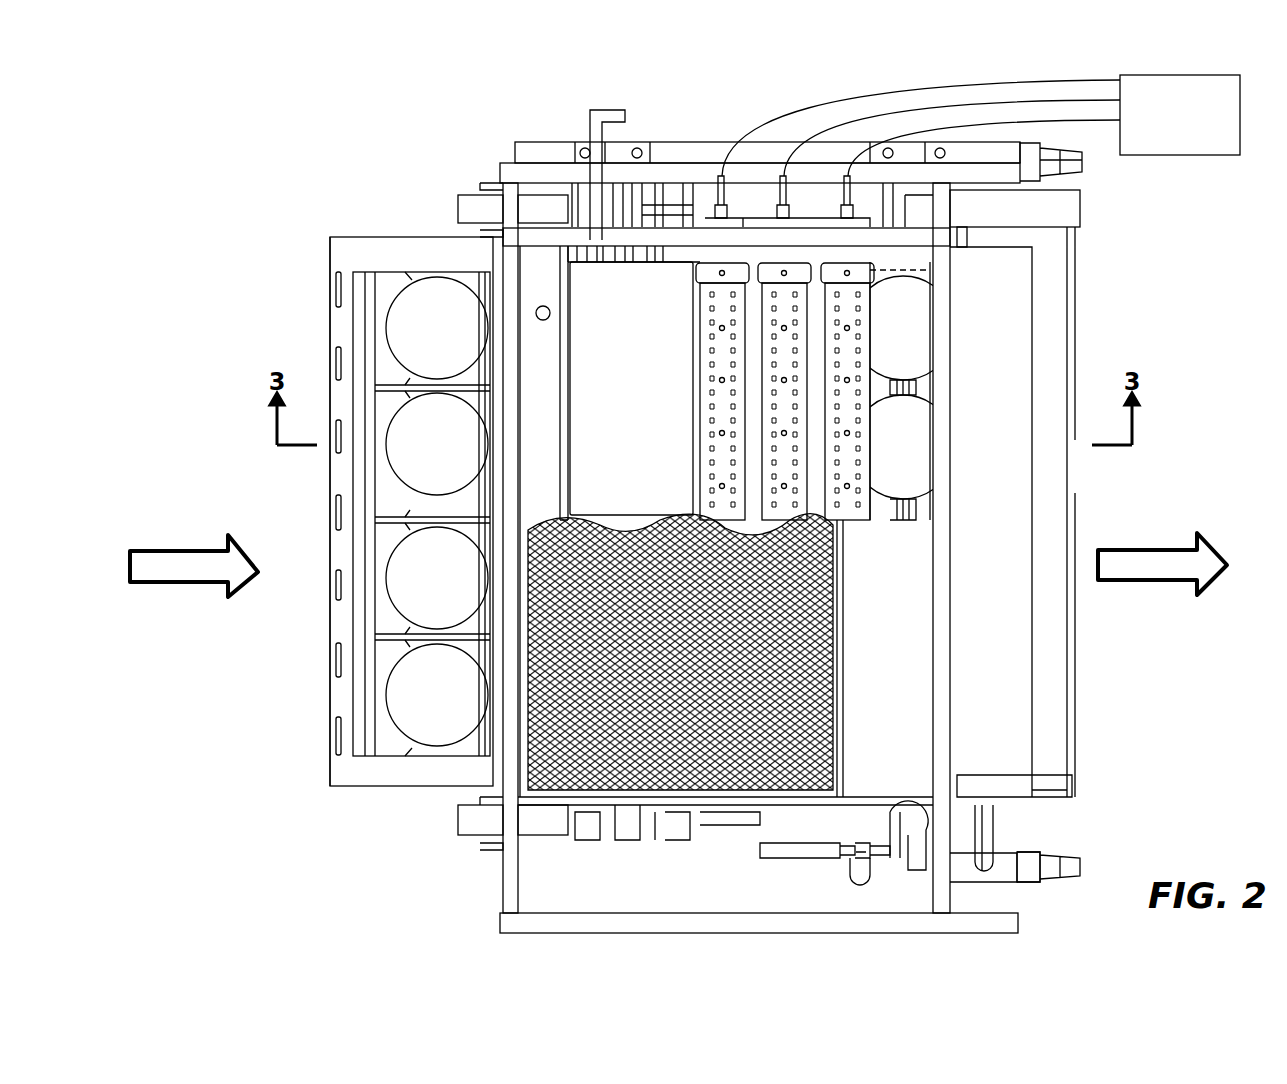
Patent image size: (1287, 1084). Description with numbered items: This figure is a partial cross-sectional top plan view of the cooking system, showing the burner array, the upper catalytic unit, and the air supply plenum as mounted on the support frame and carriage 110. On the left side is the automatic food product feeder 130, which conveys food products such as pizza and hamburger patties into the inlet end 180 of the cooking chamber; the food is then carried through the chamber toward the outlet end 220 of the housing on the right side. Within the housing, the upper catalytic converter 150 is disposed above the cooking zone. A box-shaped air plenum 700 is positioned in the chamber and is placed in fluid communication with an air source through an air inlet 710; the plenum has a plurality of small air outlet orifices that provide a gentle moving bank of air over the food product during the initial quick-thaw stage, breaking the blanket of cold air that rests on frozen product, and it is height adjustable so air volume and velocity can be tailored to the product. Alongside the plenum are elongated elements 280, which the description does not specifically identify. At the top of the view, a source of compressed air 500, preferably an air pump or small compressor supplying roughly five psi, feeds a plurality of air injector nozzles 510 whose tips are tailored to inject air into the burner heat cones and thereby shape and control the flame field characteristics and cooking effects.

The support frame and carriage 110 is at (1015, 852).
The automatic food product feeder 130 is at (333, 622).
The upper catalytic converter 150 is at (805, 700).
The inlet end 180 is at (313, 490).
The outlet end 220 is at (1088, 280).
The light tubes 280 is at (862, 350).
The source of compressed air 500 is at (1180, 155).
The air injector nozzles 510 is at (838, 207).
The air plenum 700 is at (631, 388).
The air inlet 710 is at (604, 108).